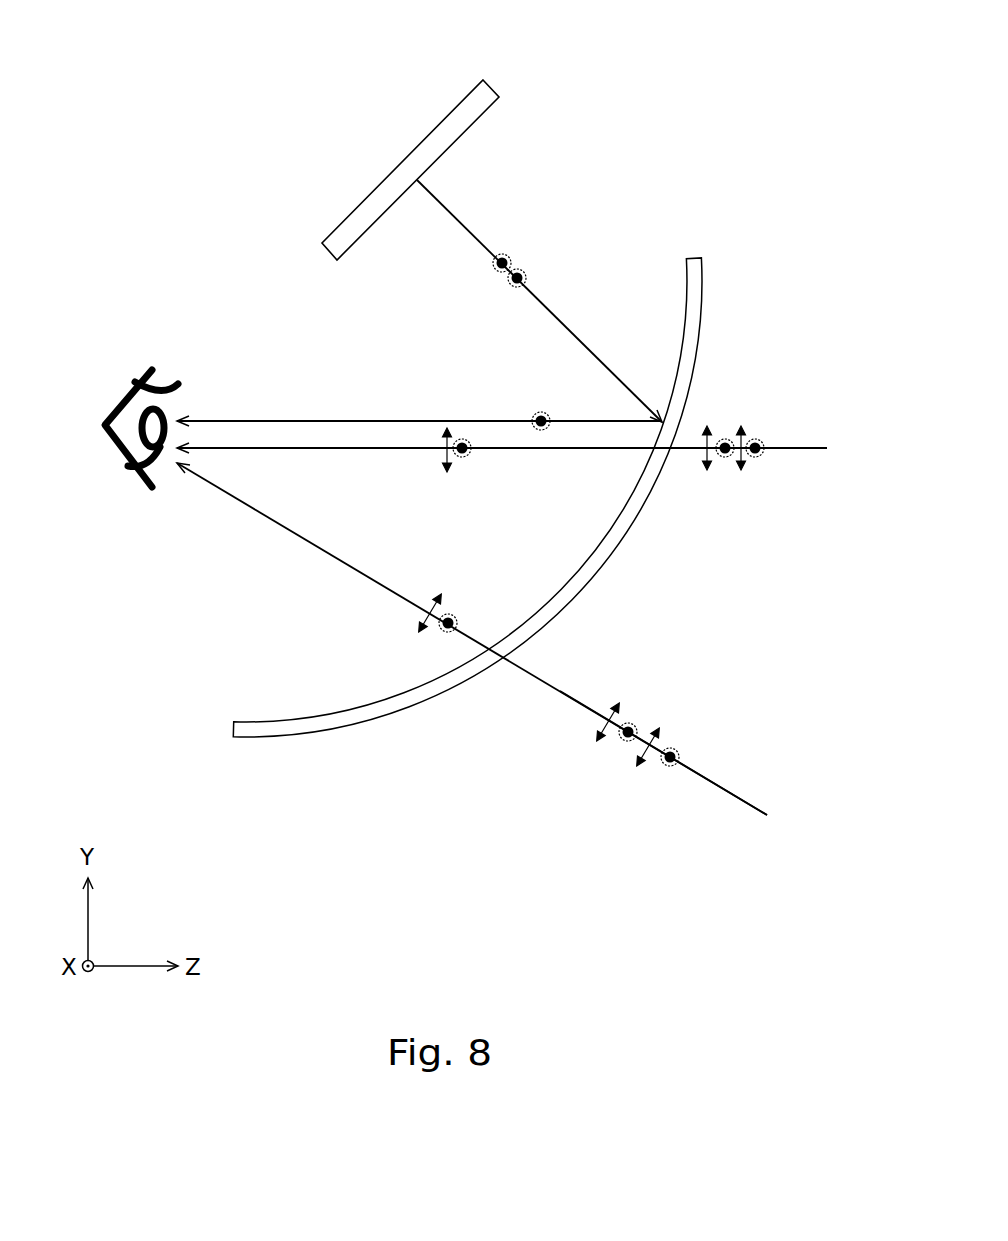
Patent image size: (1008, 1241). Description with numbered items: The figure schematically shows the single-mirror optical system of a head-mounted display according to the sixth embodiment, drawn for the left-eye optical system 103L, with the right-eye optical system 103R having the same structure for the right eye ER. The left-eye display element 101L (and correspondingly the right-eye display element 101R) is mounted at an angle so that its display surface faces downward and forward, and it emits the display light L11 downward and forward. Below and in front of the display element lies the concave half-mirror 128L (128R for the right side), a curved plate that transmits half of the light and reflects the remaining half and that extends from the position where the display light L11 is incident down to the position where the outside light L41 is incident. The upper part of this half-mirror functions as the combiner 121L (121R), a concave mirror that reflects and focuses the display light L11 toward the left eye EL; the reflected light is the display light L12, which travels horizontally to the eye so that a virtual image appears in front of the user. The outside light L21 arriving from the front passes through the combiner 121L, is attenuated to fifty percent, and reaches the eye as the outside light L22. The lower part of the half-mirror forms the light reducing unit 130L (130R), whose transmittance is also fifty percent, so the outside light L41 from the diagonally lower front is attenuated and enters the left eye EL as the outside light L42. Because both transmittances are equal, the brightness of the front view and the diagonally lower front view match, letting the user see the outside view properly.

The left-eye display element 101L is at (428, 133).
The right-eye display element 101R is at (471, 81).
The left-eye optical system 103L is at (546, 474).
The right-eye optical system 103R is at (546, 474).
The combiner 121L is at (546, 497).
The combiner 121R is at (703, 303).
The concave half-mirror 128L is at (640, 510).
The concave half-mirror 128R is at (610, 557).
The light reducing unit 130L is at (373, 731).
The light reducing unit 130R is at (418, 735).
The display light L11 is at (543, 300).
The display light L12 is at (367, 418).
The outside light L21 is at (790, 445).
The outside light L22 is at (527, 452).
The outside light L41 is at (733, 795).
The outside light L42 is at (290, 537).
The left eye EL is at (120, 453).
The right eye ER is at (133, 463).